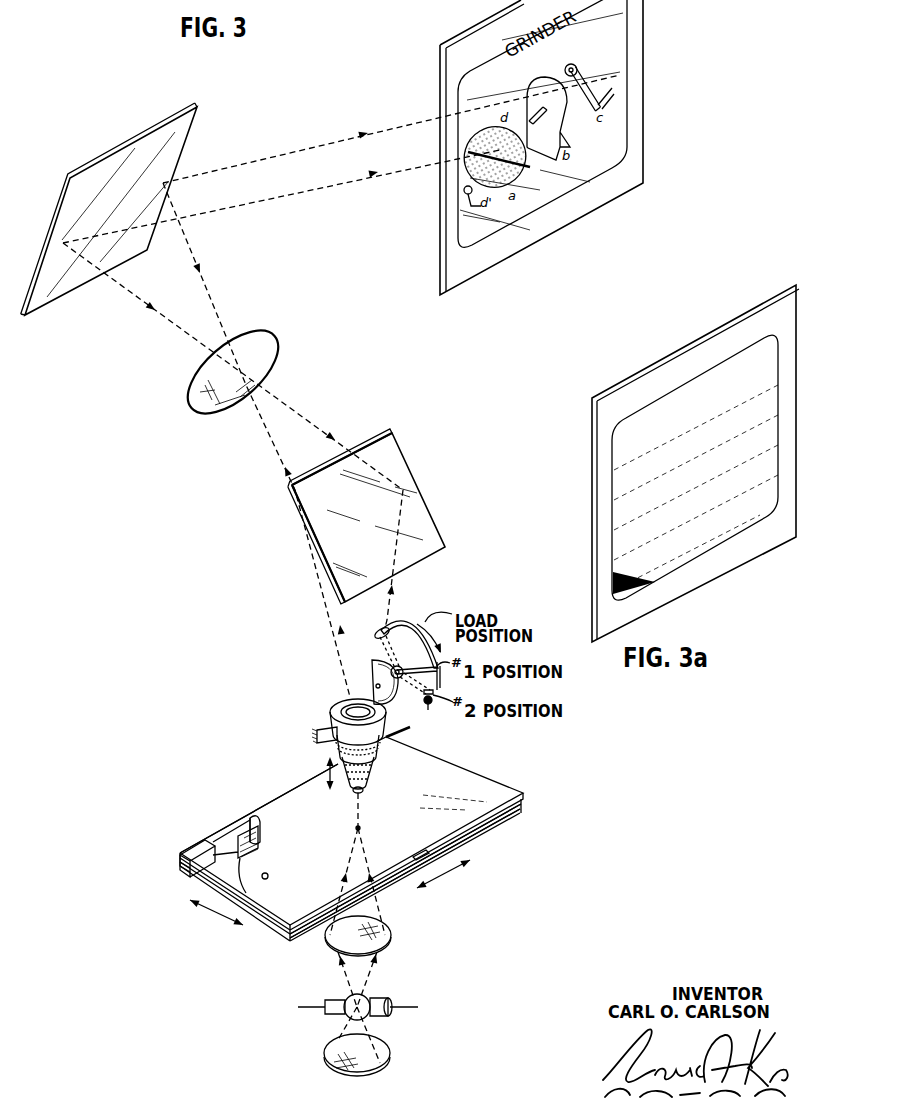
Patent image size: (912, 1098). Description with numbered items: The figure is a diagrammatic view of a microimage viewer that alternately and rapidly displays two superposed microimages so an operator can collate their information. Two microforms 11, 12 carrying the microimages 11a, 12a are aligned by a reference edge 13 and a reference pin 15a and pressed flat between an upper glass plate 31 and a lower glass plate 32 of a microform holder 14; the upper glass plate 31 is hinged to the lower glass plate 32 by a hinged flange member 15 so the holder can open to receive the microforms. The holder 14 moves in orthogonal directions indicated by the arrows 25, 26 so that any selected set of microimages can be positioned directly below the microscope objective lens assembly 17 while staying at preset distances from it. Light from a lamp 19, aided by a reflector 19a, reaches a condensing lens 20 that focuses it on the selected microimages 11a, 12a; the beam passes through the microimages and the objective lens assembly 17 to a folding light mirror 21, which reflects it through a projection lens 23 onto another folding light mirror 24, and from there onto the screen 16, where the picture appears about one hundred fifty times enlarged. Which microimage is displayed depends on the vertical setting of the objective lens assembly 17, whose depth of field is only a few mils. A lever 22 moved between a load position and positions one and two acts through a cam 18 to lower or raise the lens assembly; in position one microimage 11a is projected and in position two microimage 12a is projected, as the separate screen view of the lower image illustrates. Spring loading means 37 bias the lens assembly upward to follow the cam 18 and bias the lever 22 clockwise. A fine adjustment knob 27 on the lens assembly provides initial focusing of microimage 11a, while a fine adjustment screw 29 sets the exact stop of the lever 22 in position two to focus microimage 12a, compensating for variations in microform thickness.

In FIG. 3, the microform 11 is at (249, 823).
In FIG. 3, the microimage 11a is at (362, 827).
In FIG. 3, the microform 12 is at (258, 855).
In FIG. 3, the microimage 12a is at (356, 829).
In FIG. 3, the reference edge 13 is at (212, 848).
In FIG. 3, the microform holder 14 is at (540, 795).
In FIG. 3, the hinged flange member 15 is at (288, 791).
In FIG. 3, the reference pin 15a is at (270, 873).
In FIG. 3a, the screen 16 is at (650, 376).
In FIG. 3, the microscope objective lens assembly 17 is at (311, 752).
In FIG. 3, the cam 18 is at (371, 680).
In FIG. 3, the lamp 19 is at (383, 1003).
In FIG. 3, the reflector 19a is at (390, 1056).
In FIG. 3, the condensing lens 20 is at (388, 937).
In FIG. 3, the folding light mirror 21 is at (421, 507).
In FIG. 3, the lever 22 is at (407, 671).
In FIG. 3, the projection lens 23 is at (268, 345).
In FIG. 3, the folding light mirror 24 is at (142, 162).
In FIG. 3, the arrow 25 is at (212, 916).
In FIG. 3, the arrow 26 is at (430, 886).
In FIG. 3, the fine adjustment knob 27 is at (366, 784).
In FIG. 3, the fine adjustment screw 29 is at (430, 704).
In FIG. 3, the upper glass plate 31 is at (528, 804).
In FIG. 3, the lower glass plate 32 is at (522, 814).
In FIG. 3, the spring loading means 37 is at (396, 745).